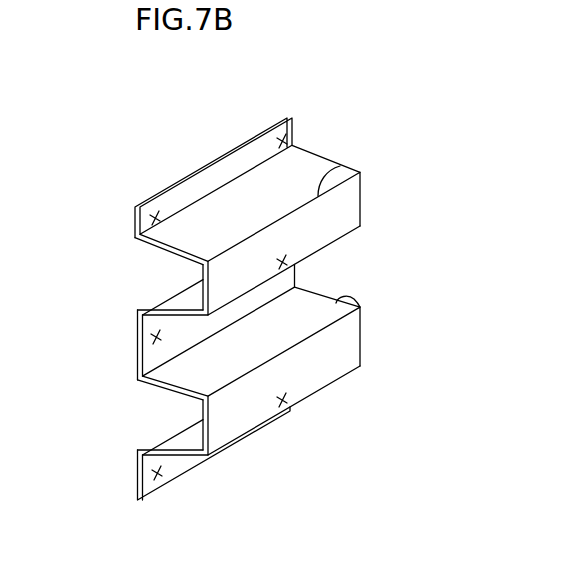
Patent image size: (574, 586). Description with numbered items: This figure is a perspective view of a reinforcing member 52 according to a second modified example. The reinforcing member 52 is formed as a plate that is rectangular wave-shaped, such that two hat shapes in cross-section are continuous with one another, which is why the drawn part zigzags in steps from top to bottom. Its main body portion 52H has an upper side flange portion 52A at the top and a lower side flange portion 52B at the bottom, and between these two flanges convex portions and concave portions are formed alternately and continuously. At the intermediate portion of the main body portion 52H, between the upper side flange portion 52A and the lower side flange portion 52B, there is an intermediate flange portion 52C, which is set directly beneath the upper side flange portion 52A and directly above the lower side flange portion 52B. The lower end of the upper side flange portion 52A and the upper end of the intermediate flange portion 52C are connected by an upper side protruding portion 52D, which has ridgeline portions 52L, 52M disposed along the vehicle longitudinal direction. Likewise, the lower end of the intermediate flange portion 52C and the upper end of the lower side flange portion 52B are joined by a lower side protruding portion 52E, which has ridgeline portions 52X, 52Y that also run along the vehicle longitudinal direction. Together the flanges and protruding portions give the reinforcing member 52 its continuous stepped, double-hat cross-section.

The reinforcing member 52 is at (306, 279).
The main body portion 52H is at (306, 293).
The upper side flange portion 52A is at (253, 158).
The lower side flange portion 52B is at (266, 430).
The intermediate flange portion 52C is at (259, 294).
The upper side protruding portion 52D is at (340, 218).
The lower side protruding portion 52E is at (321, 368).
The ridgeline portion 52L is at (348, 156).
The ridgeline portion 52M is at (331, 243).
The ridgeline portion 52X is at (356, 302).
The ridgeline portion 52Y is at (362, 375).